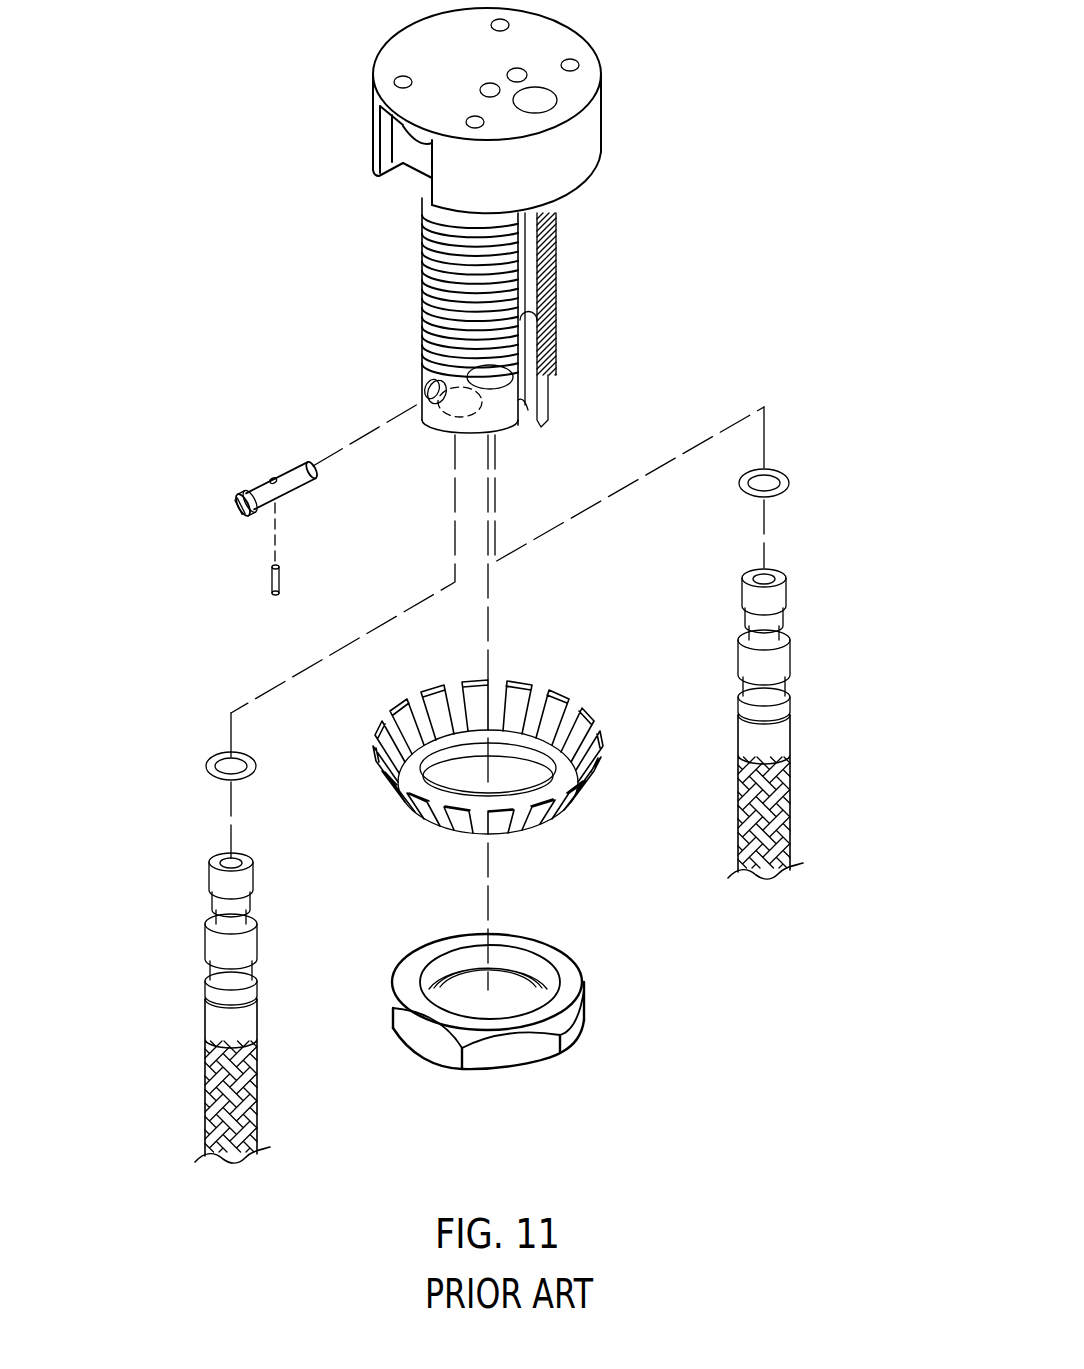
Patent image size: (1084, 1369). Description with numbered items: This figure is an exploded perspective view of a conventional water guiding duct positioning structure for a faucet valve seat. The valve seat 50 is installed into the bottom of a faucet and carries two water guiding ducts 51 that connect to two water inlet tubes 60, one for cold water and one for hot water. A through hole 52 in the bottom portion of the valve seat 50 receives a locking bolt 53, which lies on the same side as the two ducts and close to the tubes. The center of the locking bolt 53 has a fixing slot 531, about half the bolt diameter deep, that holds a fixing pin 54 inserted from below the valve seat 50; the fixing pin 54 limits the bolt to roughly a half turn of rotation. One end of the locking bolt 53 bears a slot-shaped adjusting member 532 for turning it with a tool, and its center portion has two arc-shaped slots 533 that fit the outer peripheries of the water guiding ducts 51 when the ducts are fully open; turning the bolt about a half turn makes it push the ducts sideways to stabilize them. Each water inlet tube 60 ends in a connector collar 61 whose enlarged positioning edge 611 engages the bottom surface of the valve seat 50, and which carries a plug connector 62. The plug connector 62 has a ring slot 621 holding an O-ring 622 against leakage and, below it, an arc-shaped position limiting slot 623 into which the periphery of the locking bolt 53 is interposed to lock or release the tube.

The valve seat 50 is at (622, 106).
The water guiding duct 51 is at (552, 416).
The through hole 52 is at (433, 385).
The locking bolt 53 is at (293, 493).
The fixing slot 531 is at (272, 479).
The "-"-shaped adjusting member 532 is at (237, 504).
The arc-shaped slot 533 is at (290, 464).
The fixing pin 54 is at (272, 583).
The water inlet tube 60 is at (726, 820).
The connector collar 61 is at (785, 732).
The positioning edge 611 is at (738, 698).
The plug connector 62 is at (785, 662).
The ring slot 621 is at (792, 605).
The O-ring 622 is at (779, 470).
The position limiting slot 623 is at (735, 632).